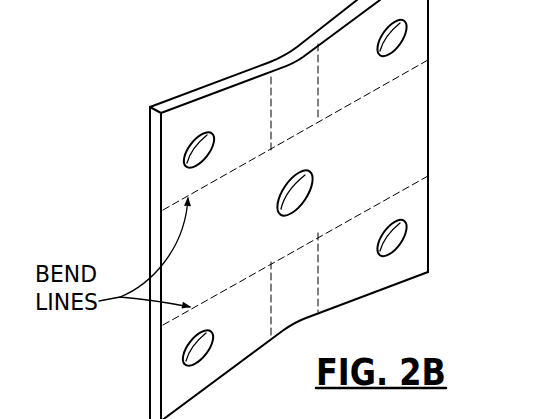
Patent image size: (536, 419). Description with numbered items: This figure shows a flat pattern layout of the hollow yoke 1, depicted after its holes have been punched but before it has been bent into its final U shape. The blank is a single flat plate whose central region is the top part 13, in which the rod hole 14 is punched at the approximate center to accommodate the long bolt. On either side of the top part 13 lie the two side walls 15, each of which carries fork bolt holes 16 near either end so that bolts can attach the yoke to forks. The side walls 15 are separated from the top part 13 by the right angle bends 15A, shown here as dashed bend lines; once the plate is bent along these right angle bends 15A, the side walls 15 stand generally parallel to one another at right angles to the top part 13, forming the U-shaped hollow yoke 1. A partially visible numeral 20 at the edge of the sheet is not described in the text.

The hollow yoke 1 is at (400, 134).
The top part 13 is at (150, 243).
The rod hole 14 is at (276, 210).
The side walls 15 is at (150, 173).
The right angle bends 15A is at (418, 64).
The fork bolt holes 16 is at (193, 145).
The bracket (adjacent figure) 20 is at (466, 414).